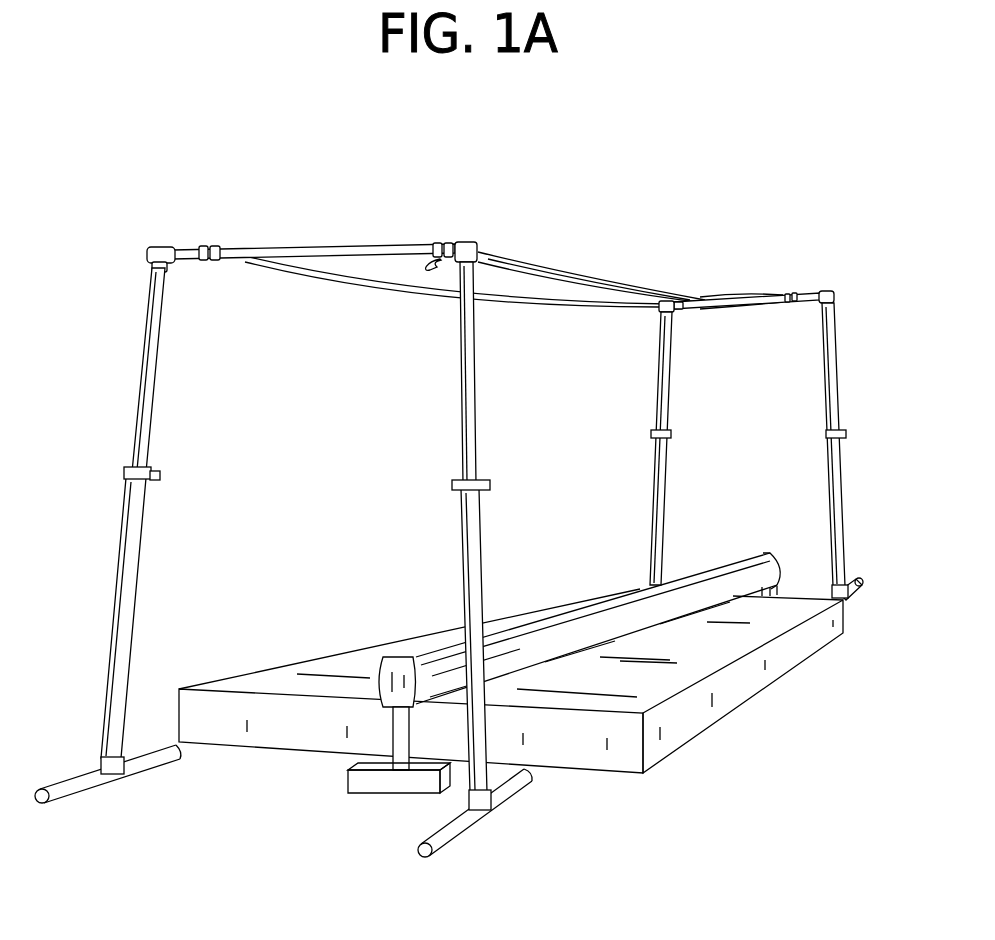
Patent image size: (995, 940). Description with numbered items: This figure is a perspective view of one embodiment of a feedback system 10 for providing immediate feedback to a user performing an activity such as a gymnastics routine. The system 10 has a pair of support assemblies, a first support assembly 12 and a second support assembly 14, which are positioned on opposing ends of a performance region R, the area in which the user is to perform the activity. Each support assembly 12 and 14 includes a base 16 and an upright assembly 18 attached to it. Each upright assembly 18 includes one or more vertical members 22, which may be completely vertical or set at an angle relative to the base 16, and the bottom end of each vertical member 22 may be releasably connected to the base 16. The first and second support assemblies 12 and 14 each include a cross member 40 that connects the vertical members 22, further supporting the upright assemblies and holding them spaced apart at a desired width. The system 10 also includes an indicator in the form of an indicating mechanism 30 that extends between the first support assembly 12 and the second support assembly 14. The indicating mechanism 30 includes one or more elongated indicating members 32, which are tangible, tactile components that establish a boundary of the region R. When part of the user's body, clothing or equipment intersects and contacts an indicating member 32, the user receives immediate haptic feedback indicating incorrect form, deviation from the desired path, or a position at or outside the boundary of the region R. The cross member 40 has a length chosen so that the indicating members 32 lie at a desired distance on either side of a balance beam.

The feedback system 10 is at (157, 208).
The first support assembly 12 is at (118, 311).
The second support assembly 14 is at (843, 340).
The base 16 is at (463, 830).
The upright assembly 18 is at (470, 417).
The vertical member 22 is at (155, 385).
The indicating mechanism 30 is at (676, 289).
The elongated indicating member 32 is at (367, 291).
The cross member 40 is at (327, 243).
The region R is at (562, 331).